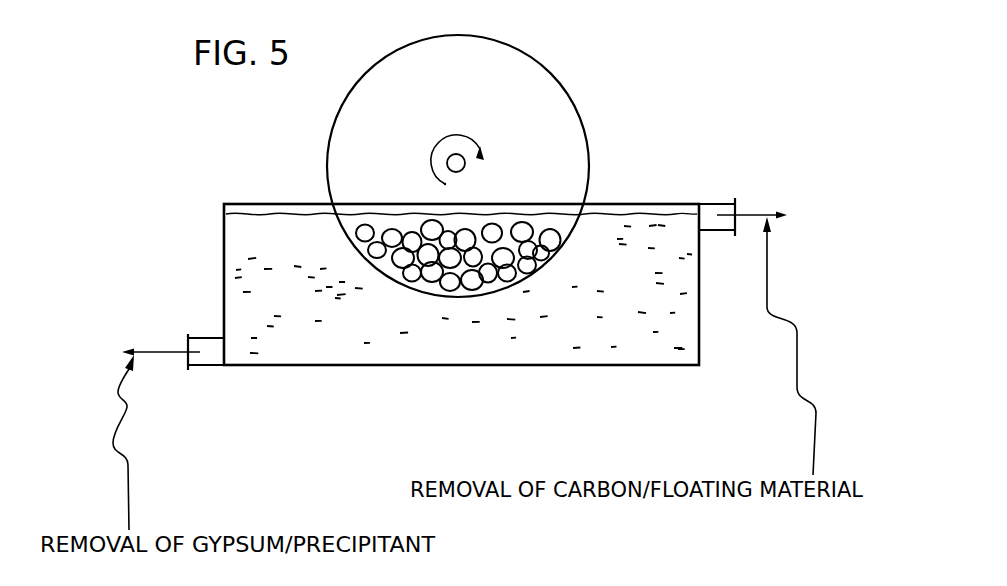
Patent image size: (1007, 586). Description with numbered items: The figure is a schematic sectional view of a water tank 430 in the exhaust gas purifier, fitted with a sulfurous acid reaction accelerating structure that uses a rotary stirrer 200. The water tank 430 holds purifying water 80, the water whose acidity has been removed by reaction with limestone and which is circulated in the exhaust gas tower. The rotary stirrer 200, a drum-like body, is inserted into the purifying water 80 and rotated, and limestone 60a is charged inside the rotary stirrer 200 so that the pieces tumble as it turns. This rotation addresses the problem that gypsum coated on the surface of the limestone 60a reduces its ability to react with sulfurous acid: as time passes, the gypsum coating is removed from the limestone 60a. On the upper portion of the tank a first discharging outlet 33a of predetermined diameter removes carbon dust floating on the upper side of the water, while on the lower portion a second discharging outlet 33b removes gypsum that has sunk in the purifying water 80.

The rotary stirrer 200 is at (572, 93).
The limestone 60a is at (563, 240).
The purifying water 80 is at (237, 285).
The water tank 430 is at (378, 367).
The first discharging outlet 33a is at (720, 208).
The second discharging outlet 33b is at (204, 358).